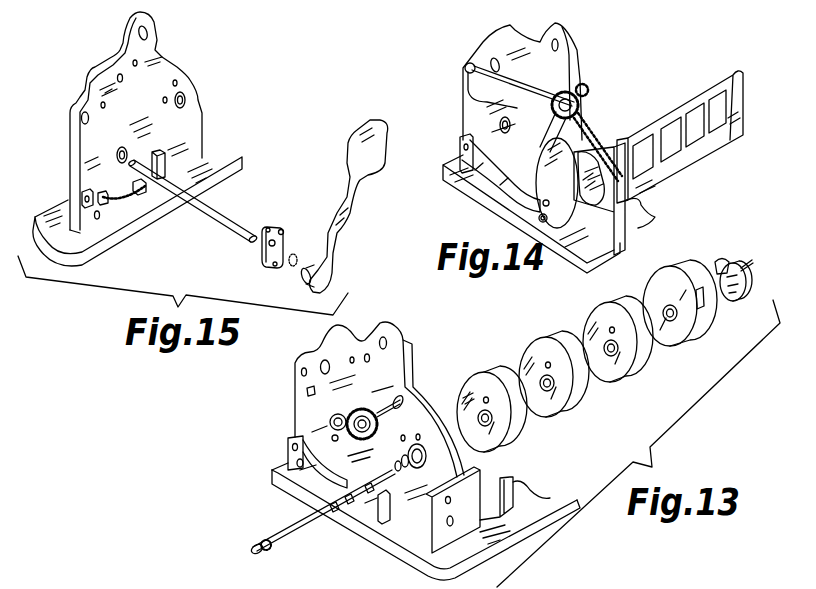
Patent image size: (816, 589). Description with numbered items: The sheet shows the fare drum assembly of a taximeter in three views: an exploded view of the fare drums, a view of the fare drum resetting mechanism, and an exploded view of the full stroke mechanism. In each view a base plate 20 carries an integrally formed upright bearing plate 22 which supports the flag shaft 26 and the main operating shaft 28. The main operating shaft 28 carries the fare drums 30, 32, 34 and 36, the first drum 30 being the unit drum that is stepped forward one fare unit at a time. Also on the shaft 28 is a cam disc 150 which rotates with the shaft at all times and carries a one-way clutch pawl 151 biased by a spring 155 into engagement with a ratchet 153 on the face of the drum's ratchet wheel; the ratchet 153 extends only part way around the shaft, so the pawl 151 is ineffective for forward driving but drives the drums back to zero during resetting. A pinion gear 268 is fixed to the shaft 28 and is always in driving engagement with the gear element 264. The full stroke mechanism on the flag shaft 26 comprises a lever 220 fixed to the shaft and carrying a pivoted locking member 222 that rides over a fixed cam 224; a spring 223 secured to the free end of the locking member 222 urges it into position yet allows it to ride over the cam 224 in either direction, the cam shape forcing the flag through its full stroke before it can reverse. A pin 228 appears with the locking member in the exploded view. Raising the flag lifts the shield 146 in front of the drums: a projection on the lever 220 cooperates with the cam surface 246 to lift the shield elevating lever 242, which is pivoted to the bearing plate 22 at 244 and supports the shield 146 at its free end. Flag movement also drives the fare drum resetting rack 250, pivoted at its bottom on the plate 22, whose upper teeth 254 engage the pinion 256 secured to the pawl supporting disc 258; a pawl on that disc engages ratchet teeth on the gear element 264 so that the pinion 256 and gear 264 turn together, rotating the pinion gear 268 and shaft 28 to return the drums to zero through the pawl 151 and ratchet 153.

In FIG. 15, the base plate 20 is at (230, 157).
In FIG. 14, the base plate 20 is at (645, 216).
In FIG. 13, the base plate 20 is at (547, 503).
In FIG. 15, the bearing plate 22 is at (178, 72).
In FIG. 14, the bearing plate 22 is at (578, 55).
In FIG. 13, the bearing plate 22 is at (402, 338).
In FIG. 15, the flag shaft 26 is at (215, 212).
In FIG. 13, the main operating shaft 28 is at (312, 523).
In FIG. 13, the fare drum 30 is at (698, 343).
In FIG. 13, the fare drum 32 is at (640, 373).
In FIG. 13, the fare drum 34 is at (575, 410).
In FIG. 13, the fare drum 36 is at (512, 443).
In FIG. 14, the shield 146 is at (732, 137).
In FIG. 13, the cam disc 150 is at (740, 301).
In FIG. 13, the pawl 151 is at (727, 262).
In FIG. 13, the ratchet 153 is at (704, 305).
In FIG. 13, the spring 155 is at (750, 280).
In FIG. 15, the lever 220 is at (272, 228).
In FIG. 15, the locking member 222 is at (276, 264).
In FIG. 15, the spring 223 is at (298, 247).
In FIG. 15, the cam 224 is at (95, 222).
In FIG. 14, the cam 224 is at (478, 185).
In FIG. 13, the cam 224 is at (288, 452).
In FIG. 15, the pivot pin 228 is at (283, 232).
In FIG. 14, the shield elevating lever 242 is at (475, 80).
In FIG. 14, the pivot 244 is at (467, 64).
In FIG. 14, the cam surface 246 is at (485, 97).
In FIG. 14, the fare drum resetting rack 250 is at (555, 172).
In FIG. 14, the teeth 254 is at (590, 125).
In FIG. 14, the pinion 256 is at (557, 95).
In FIG. 14, the pawl supporting disc 258 is at (590, 102).
In FIG. 14, the gear element 264 is at (588, 90).
In FIG. 13, the pinion gear 268 is at (262, 540).